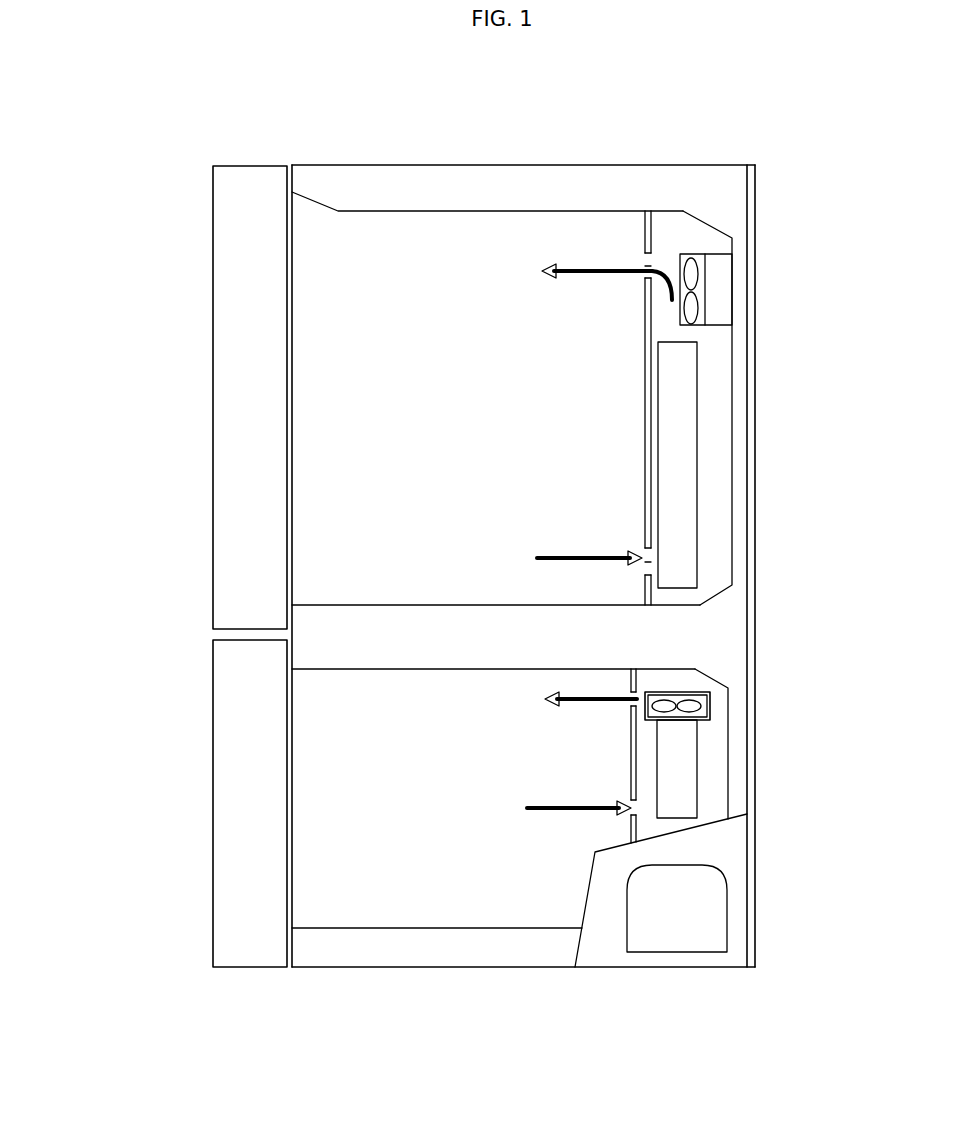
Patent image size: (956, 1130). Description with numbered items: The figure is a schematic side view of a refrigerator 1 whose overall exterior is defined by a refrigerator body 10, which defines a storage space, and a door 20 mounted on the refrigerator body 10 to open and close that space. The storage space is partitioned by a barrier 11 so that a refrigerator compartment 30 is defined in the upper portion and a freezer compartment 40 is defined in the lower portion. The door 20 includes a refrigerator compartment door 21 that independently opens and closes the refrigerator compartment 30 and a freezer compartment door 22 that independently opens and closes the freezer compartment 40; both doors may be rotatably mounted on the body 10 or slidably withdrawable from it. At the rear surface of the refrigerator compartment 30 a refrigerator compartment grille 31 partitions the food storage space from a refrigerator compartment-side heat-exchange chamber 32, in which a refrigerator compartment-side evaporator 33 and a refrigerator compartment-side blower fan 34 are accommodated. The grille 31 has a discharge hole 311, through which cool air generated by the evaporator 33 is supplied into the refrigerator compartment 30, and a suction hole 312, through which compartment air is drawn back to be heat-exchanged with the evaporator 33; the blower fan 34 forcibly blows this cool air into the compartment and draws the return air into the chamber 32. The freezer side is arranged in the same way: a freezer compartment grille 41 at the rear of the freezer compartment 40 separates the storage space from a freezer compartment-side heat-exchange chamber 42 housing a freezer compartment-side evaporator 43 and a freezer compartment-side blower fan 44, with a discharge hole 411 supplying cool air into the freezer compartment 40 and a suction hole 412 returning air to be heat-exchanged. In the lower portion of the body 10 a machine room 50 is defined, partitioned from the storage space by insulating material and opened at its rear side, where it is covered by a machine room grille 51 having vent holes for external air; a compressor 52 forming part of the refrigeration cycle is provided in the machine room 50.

The refrigerator 1 is at (299, 143).
The refrigerator body 10 is at (711, 154).
The barrier 11 is at (347, 655).
The door 20 is at (166, 566).
The refrigerator compartment door 21 is at (224, 572).
The freezer compartment door 22 is at (237, 706).
The refrigerator compartment 30 is at (431, 460).
The refrigerator compartment grille 31 is at (646, 410).
The discharge hole 311 is at (648, 262).
The suction hole 312 is at (646, 572).
The refrigerator compartment-side heat-exchange chamber 32 is at (717, 528).
The refrigerator compartment-side evaporator 33 is at (692, 409).
The refrigerator compartment-side blower fan 34 is at (728, 283).
The freezer compartment 40 is at (431, 741).
The freezer compartment grille 41 is at (632, 745).
The discharge hole 411 is at (632, 690).
The suction hole 412 is at (632, 820).
The freezer compartment-side heat-exchange chamber 42 is at (698, 682).
The freezer compartment-side evaporator 43 is at (692, 778).
The freezer compartment-side blower fan 44 is at (729, 705).
The machine room 50 is at (601, 958).
The machine room grille 51 is at (755, 872).
The compressor 52 is at (680, 940).